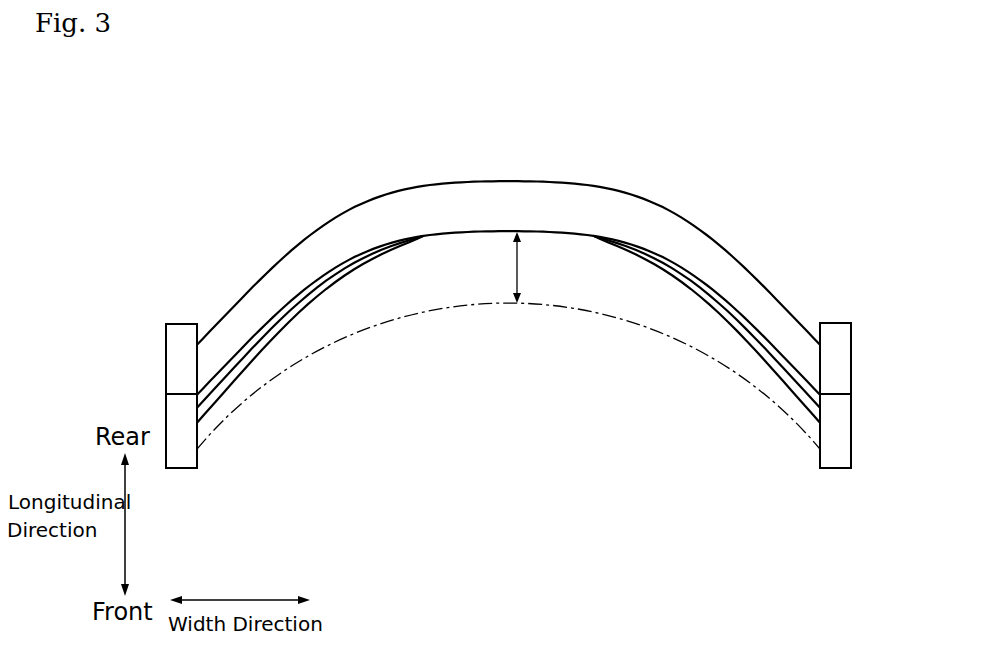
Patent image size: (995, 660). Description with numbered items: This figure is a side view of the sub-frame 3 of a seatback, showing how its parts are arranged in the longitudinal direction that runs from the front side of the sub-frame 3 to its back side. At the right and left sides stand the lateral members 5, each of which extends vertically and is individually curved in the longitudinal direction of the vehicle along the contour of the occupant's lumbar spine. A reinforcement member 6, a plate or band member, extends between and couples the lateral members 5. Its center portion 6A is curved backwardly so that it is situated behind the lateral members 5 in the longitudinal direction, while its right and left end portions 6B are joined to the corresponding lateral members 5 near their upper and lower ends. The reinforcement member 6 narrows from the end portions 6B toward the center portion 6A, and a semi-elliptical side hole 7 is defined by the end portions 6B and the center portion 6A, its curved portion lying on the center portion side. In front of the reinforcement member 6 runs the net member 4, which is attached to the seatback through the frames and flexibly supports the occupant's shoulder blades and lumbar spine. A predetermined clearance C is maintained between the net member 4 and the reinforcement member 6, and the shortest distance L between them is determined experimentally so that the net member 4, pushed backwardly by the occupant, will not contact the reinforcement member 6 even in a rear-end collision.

The sub-frame 3 is at (507, 306).
The net member 4 is at (283, 373).
The lateral members 5 is at (177, 370).
The reinforcement member 6 is at (655, 218).
The center portion 6A is at (517, 195).
The end portions 6B is at (217, 316).
The semi-elliptical side hole 7 is at (298, 292).
The shortest distance L is at (520, 268).
The clearance C is at (607, 292).